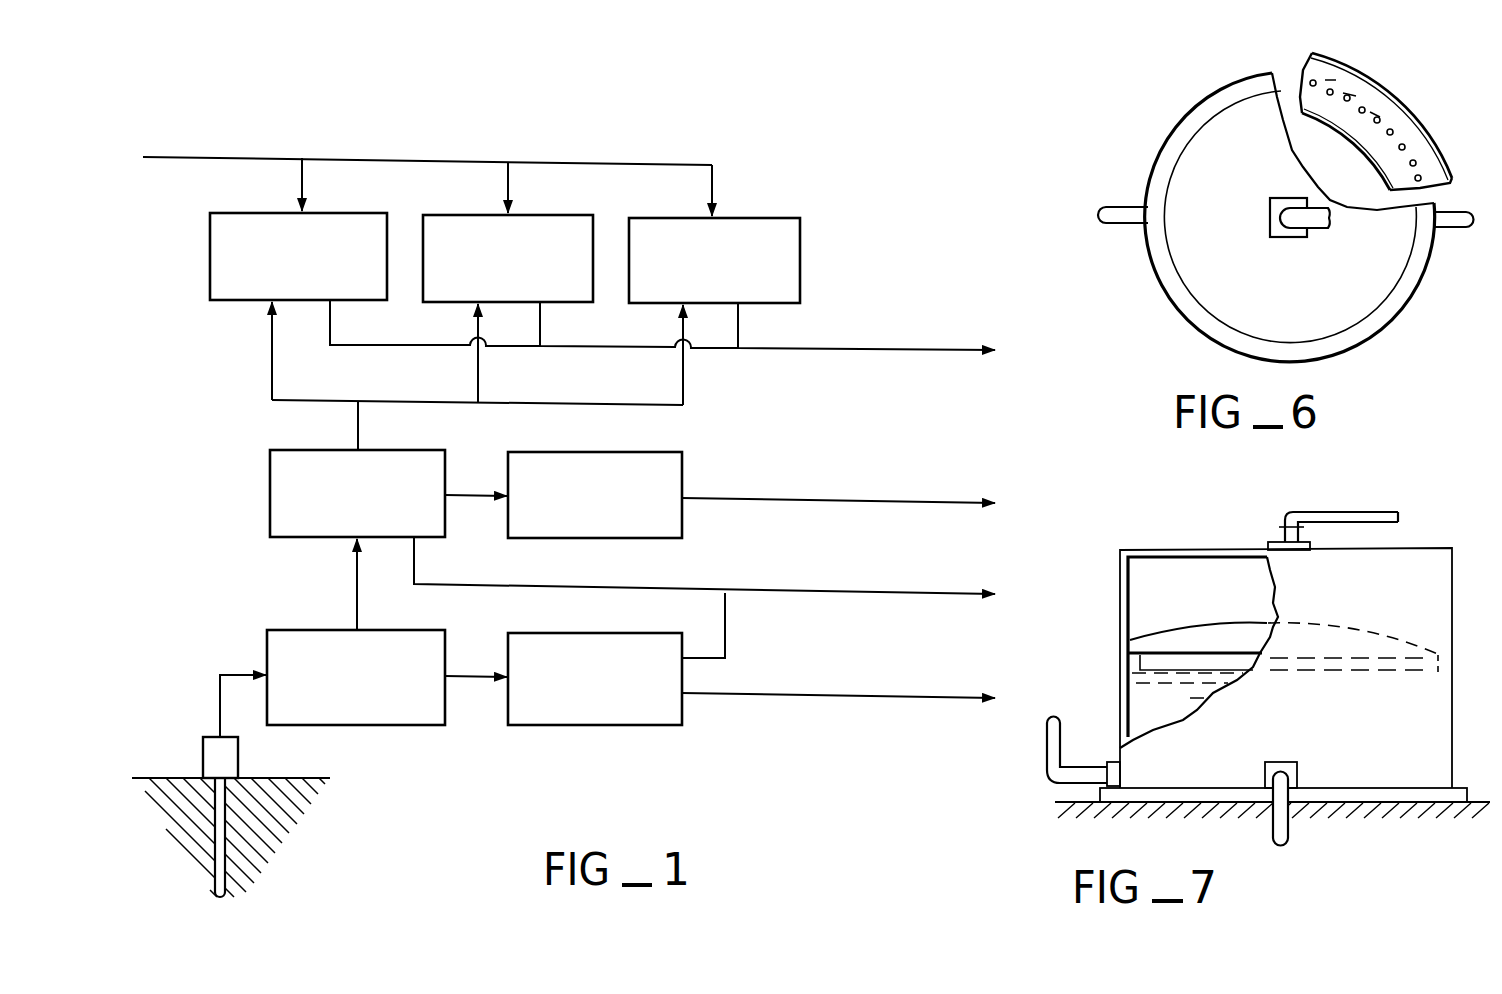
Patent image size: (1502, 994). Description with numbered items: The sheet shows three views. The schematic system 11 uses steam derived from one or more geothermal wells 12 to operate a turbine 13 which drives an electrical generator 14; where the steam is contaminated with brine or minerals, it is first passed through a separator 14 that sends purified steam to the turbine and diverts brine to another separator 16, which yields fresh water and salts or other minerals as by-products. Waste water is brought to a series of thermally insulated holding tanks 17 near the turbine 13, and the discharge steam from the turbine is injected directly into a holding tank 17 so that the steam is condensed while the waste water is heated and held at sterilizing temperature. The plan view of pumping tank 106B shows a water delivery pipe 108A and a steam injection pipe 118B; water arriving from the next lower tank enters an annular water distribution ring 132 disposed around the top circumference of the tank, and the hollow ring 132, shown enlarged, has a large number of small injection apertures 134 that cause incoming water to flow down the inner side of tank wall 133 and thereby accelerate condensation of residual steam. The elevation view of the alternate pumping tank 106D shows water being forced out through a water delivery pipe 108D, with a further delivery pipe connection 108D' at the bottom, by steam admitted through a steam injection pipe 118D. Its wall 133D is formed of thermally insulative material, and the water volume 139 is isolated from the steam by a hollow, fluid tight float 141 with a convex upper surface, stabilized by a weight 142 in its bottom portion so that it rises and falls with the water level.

In FIG. 1, the system 11 is at (774, 182).
In FIG. 1, the geothermal well 12 is at (238, 760).
In FIG. 1, the turbine 13 is at (270, 480).
In FIG. 1, the electrical generator 14 is at (683, 465).
In FIG. 1, the separator 16 is at (648, 727).
In FIG. 1, the holding tank 17 is at (210, 264).
In FIG. 6, the primary water pumping tank 106B is at (1392, 328).
In FIG. 6, the water delivery pipe 108A is at (1122, 203).
In FIG. 6, the steam injection pipe 118B is at (1313, 231).
In FIG. 6, the annular water distribution ring 132 is at (1333, 54).
In FIG. 6, the tank wall 133 is at (1362, 92).
In FIG. 6, the injection apertures 134 is at (1392, 131).
In FIG. 7, the pumping tank 106D is at (1425, 545).
In FIG. 7, the water delivery pipe 108D is at (1083, 740).
In FIG. 7, the water delivery pipe 108D' is at (1324, 804).
In FIG. 7, the steam injection pipe 118D is at (1352, 508).
In FIG. 7, the tank wall 133D is at (1120, 575).
In FIG. 7, the water volume 139 is at (1184, 715).
In FIG. 7, the float structure 141 is at (1205, 627).
In FIG. 7, the weight 142 is at (1167, 662).